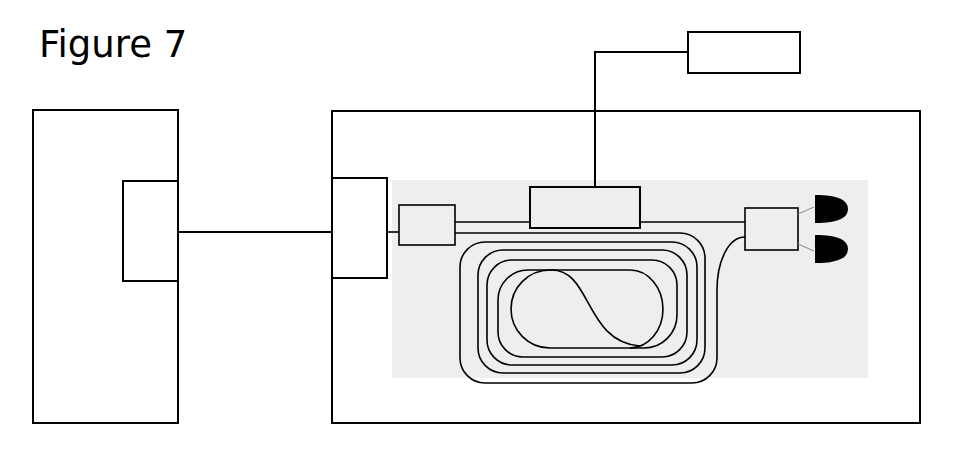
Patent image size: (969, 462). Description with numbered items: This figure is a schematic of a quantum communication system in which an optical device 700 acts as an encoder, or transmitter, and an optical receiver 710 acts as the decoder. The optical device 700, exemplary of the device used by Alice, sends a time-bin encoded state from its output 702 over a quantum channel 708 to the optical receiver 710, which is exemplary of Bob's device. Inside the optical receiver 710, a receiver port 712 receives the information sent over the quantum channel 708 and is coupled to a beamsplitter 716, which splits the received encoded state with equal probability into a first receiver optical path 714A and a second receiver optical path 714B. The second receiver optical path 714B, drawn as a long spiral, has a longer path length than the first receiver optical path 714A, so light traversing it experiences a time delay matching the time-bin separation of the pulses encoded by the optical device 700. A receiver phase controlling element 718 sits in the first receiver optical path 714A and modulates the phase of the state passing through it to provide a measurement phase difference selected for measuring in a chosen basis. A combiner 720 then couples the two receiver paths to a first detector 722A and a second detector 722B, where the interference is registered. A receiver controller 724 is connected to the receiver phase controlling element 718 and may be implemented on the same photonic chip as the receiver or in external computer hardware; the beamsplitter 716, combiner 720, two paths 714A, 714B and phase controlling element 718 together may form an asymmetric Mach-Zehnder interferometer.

The optical device 700 is at (105, 266).
The output 702 is at (150, 231).
The quantum channel 708 is at (256, 232).
The optical receiver 710 is at (626, 267).
The receiver port 712 is at (359, 228).
The first receiver optical path 714A is at (670, 222).
The second receiver optical path 714B is at (717, 303).
The beamsplitter 716 is at (421, 225).
The receiver phase controlling element 718 is at (585, 207).
The combiner 720 is at (779, 229).
The first detector 722A is at (856, 209).
The second detector 722B is at (856, 249).
The receiver controller 724 is at (697, 109).